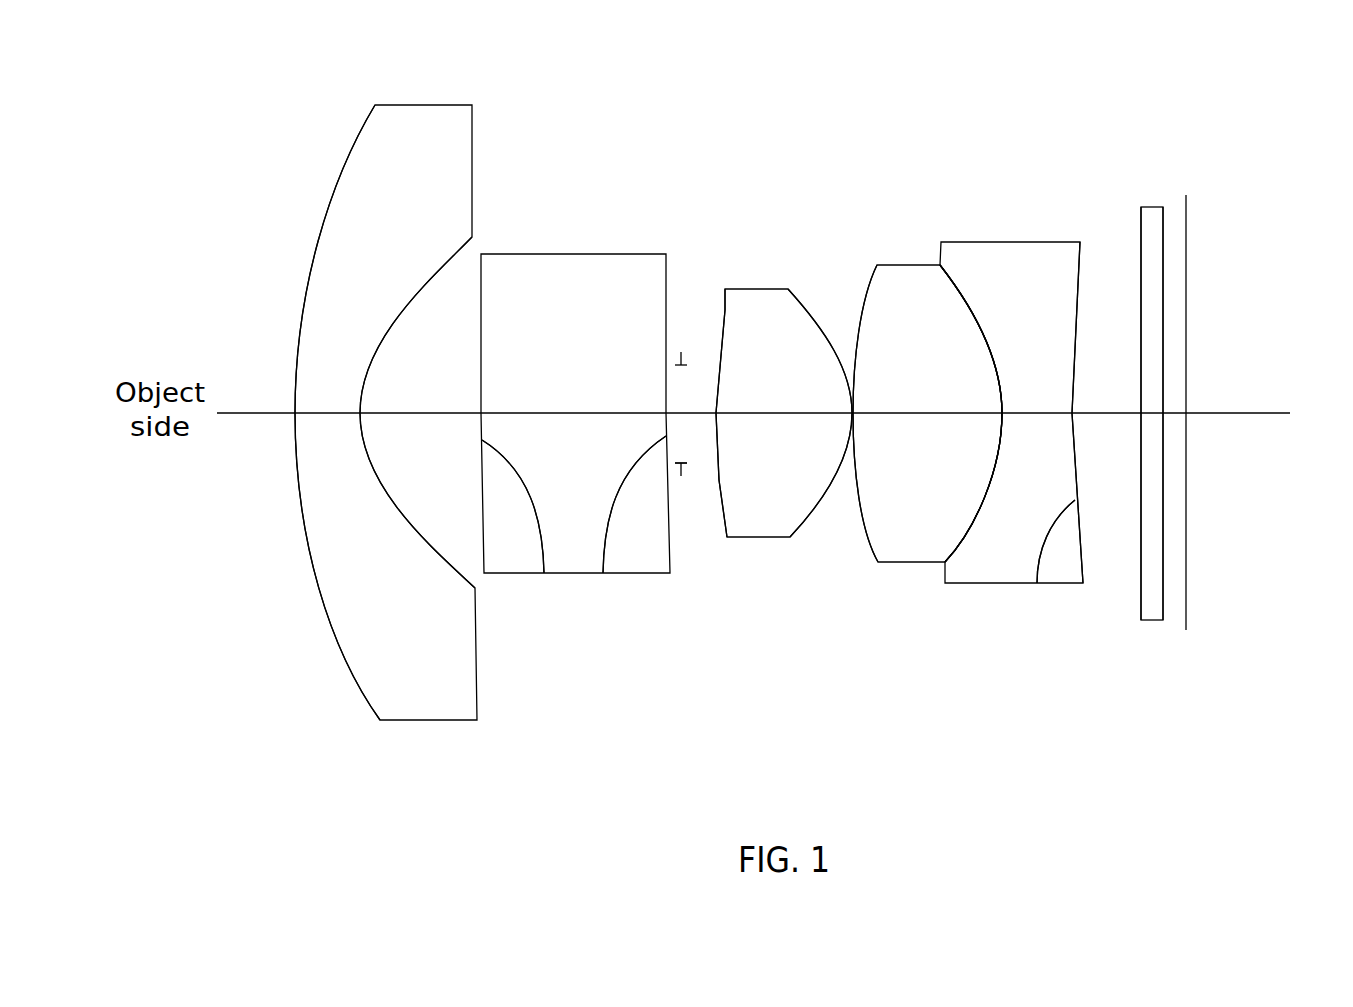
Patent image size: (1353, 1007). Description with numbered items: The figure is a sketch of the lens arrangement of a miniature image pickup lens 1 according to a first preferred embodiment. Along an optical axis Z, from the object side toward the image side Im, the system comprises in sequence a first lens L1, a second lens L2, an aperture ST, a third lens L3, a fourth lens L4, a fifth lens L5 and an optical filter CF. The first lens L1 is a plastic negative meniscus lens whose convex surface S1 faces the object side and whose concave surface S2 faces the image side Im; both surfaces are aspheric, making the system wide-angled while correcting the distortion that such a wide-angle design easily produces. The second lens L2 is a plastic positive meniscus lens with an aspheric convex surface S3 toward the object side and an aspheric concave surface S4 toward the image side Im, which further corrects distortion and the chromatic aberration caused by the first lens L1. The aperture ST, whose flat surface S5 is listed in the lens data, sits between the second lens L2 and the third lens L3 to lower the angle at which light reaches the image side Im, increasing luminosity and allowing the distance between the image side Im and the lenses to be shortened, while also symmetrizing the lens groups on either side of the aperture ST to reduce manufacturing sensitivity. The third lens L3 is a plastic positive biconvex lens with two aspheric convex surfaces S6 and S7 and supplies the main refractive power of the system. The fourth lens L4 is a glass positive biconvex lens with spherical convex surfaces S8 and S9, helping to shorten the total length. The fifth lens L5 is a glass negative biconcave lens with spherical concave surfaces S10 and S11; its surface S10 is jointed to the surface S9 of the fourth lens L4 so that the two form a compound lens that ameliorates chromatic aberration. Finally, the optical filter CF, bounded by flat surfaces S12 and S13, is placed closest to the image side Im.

The miniature image pickup lens 1 is at (1249, 110).
The optical axis Z is at (230, 414).
The first lens L1 is at (363, 168).
The second lens L2 is at (571, 290).
The third lens L3 is at (755, 320).
The fourth lens L4 is at (897, 293).
The fifth lens L5 is at (1020, 268).
The aperture ST is at (681, 352).
The convex surface S1 is at (343, 663).
The concave surface S2 is at (429, 550).
The convex surface S3 is at (544, 573).
The concave surface S4 is at (603, 573).
The aperture surface S5 is at (681, 463).
The convex surface S6 is at (717, 480).
The convex surface S7 is at (810, 517).
The convex surface S8 is at (860, 500).
The convex surface S9 is at (967, 537).
The concave surface S10 is at (971, 413).
The concave surface S11 is at (1037, 583).
The optical filter CF is at (1152, 217).
The filter surface S12 is at (1143, 583).
The filter surface S13 is at (1165, 607).
The image side Im is at (1187, 588).